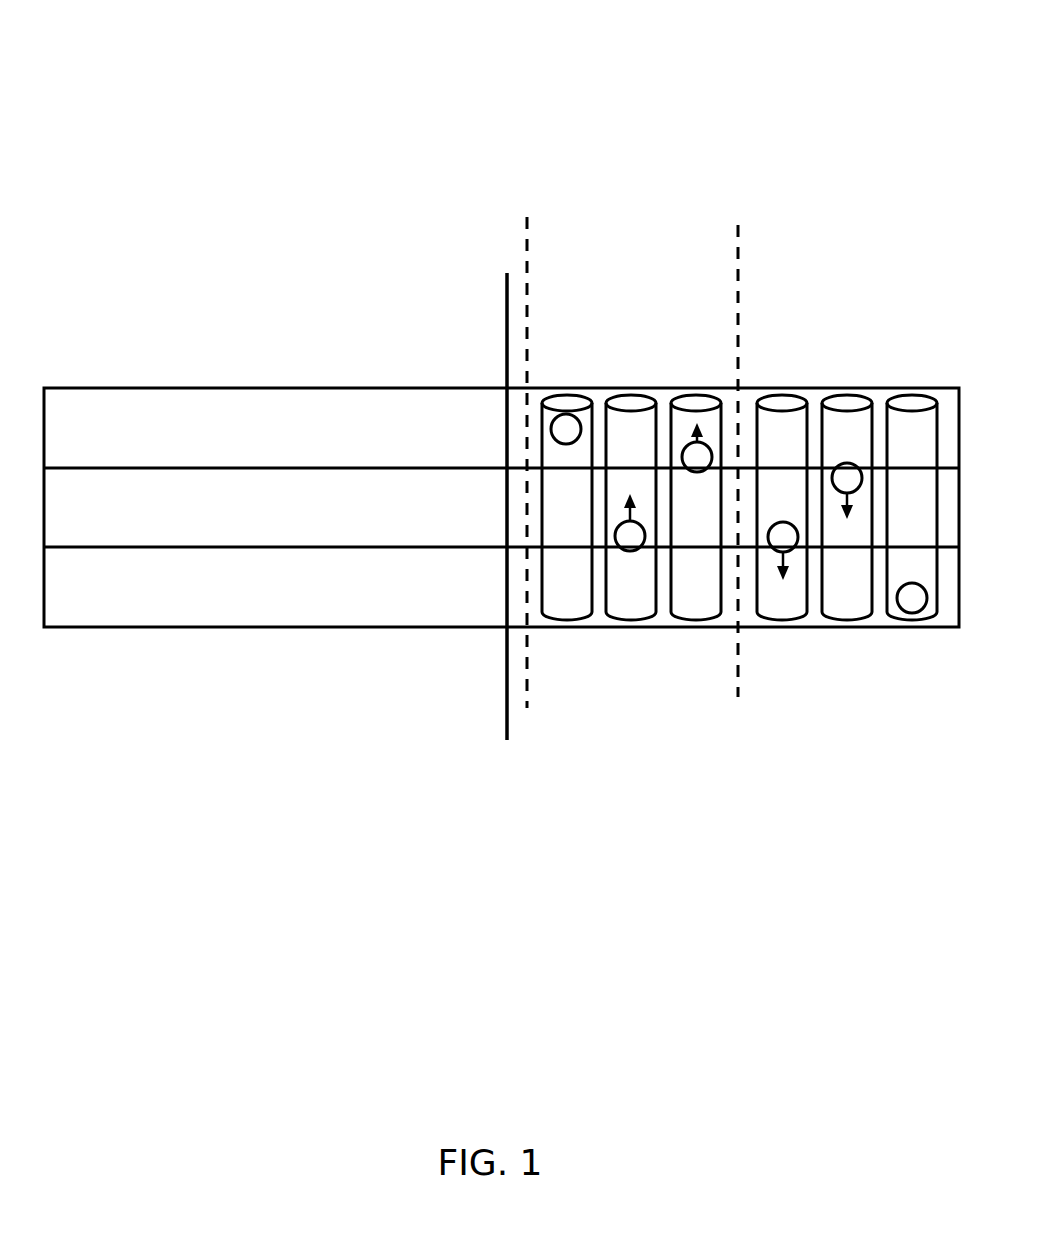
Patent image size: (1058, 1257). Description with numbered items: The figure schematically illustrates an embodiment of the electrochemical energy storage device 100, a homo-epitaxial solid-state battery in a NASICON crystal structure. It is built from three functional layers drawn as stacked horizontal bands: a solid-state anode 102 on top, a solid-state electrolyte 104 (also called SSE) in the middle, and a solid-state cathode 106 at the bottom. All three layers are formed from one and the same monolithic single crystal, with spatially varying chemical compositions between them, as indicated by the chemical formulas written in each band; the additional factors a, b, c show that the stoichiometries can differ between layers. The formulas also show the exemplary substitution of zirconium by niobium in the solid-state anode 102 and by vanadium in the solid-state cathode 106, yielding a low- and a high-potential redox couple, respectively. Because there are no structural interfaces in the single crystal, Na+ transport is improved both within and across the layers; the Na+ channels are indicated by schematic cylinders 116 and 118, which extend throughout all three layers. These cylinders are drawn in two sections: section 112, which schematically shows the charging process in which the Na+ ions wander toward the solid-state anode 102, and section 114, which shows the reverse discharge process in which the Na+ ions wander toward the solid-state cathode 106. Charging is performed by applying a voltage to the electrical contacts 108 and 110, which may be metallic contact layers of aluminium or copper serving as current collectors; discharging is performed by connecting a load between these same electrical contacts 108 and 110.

The electrochemical energy storage device 100 is at (219, 71).
The solid-state anode 102 is at (316, 386).
The solid-state electrolyte 104 is at (78, 520).
The solid-state cathode 106 is at (323, 627).
The electrical contact 108 is at (507, 273).
The electrical contact 110 is at (502, 757).
The section 112 is at (722, 217).
The section 114 is at (936, 217).
The schematic cylinder 116 is at (773, 558).
The schematic cylinder 118 is at (938, 613).